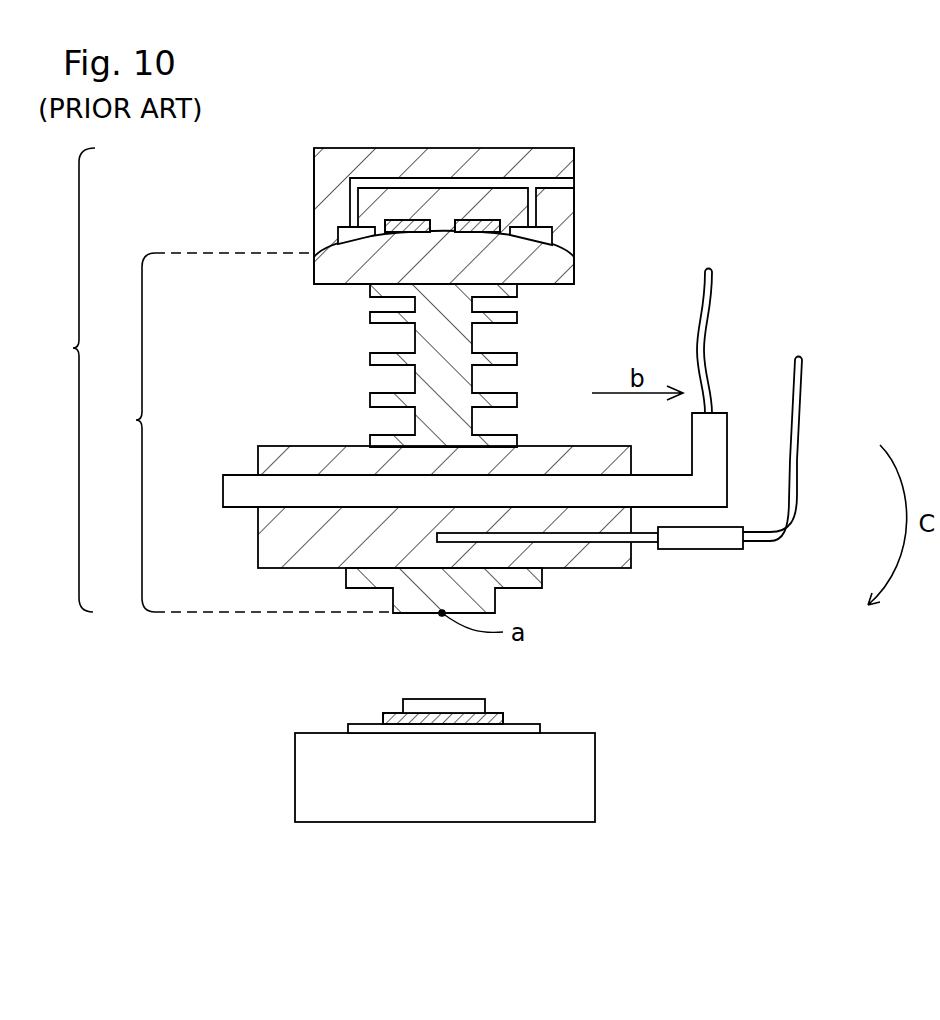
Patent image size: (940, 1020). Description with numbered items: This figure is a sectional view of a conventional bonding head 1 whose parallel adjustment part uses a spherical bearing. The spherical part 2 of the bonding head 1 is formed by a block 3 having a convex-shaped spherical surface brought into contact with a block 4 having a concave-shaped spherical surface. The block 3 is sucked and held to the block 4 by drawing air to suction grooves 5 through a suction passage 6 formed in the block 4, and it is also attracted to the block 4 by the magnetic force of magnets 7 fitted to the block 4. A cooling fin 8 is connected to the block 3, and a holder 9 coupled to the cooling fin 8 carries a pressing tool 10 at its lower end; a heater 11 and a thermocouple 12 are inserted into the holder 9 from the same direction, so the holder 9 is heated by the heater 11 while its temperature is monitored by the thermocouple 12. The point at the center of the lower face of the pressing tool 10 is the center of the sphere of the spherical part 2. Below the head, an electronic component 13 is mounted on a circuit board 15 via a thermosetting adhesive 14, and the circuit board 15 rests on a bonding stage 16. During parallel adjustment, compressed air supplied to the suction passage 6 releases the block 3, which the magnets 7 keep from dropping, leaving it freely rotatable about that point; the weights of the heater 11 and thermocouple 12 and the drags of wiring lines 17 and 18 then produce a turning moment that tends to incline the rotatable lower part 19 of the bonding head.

The bonding head 1 is at (75, 380).
The spherical part 2 is at (320, 243).
The block with convex-shaped spherical part 3 is at (332, 270).
The block with concave-shaped spherical part 4 is at (320, 178).
The suction grooves 5 is at (375, 233).
The suction passage 6 is at (575, 185).
The magnets 7 is at (422, 220).
The cooling fin 8 is at (517, 318).
The holder 9 is at (280, 553).
The pressing tool 10 is at (367, 575).
The heater 11 is at (715, 457).
The thermocouple 12 is at (618, 540).
The electronic component 13 is at (485, 703).
The thermosetting adhesive 14 is at (503, 718).
The circuit board 15 is at (540, 728).
The bonding stage 16 is at (580, 783).
The wiring line 17 is at (715, 303).
The wiring line 18 is at (802, 418).
The lower part of the bonding head 19 is at (245, 432).